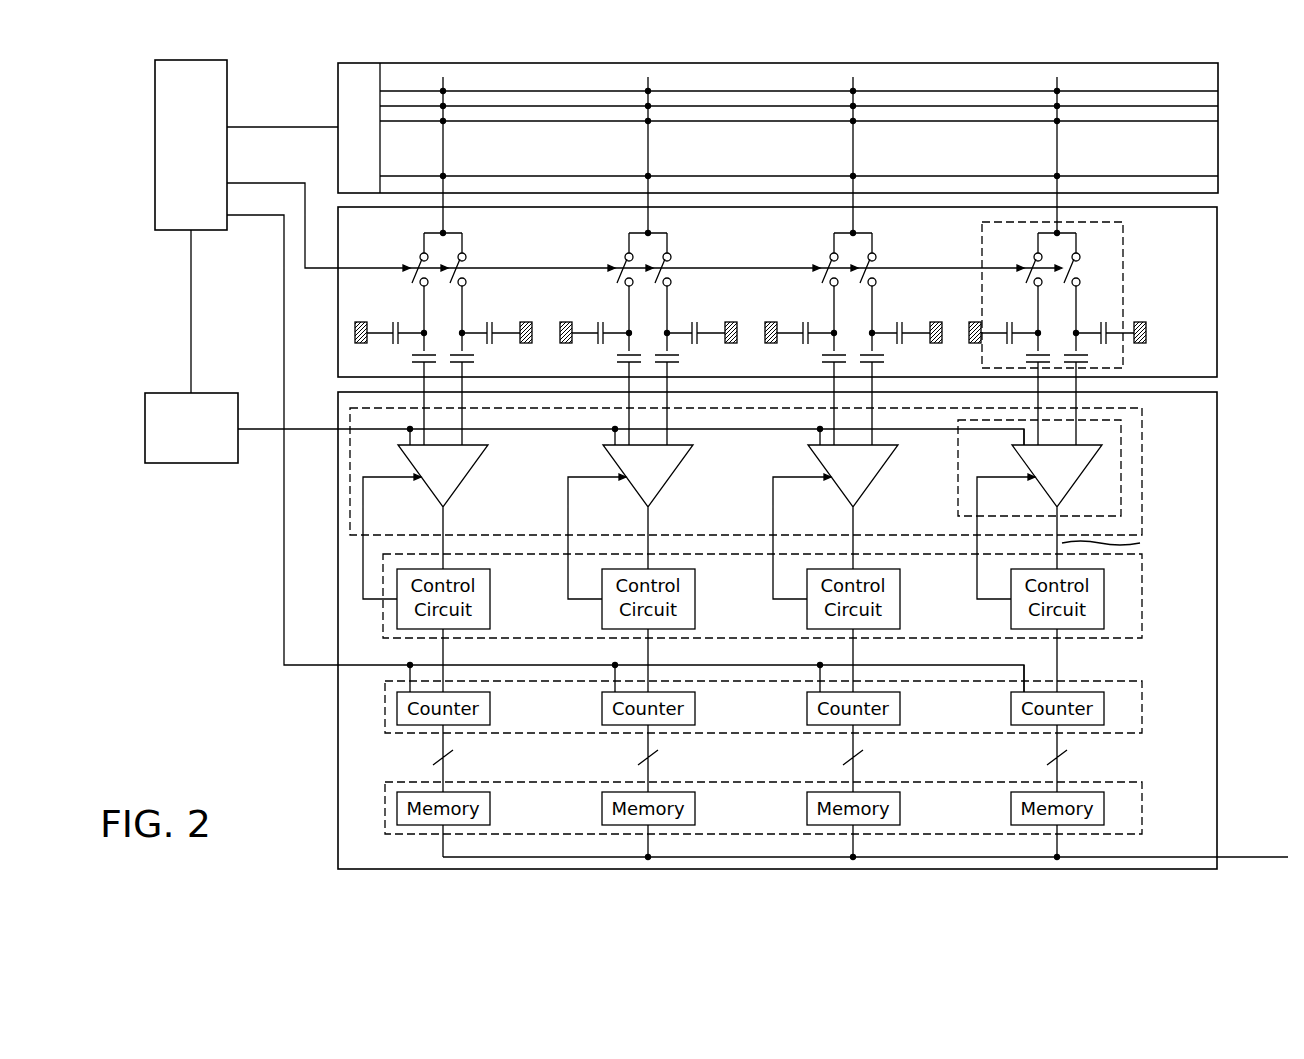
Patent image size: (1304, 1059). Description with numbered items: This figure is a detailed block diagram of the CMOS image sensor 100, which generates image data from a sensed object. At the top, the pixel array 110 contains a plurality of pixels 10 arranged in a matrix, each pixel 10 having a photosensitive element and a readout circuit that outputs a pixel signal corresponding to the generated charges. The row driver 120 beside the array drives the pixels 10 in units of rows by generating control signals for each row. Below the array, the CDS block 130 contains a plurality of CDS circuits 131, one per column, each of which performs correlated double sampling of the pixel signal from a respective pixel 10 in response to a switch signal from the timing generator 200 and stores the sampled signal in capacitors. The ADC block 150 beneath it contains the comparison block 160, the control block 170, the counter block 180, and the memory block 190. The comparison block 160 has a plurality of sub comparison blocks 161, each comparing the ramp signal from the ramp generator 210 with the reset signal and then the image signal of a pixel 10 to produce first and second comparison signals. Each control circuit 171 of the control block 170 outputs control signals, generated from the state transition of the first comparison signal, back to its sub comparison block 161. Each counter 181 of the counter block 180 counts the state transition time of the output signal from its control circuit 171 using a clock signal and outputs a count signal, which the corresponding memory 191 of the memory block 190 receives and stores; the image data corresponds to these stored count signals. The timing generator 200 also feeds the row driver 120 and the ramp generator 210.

The CMOS image sensor 100 is at (128, 57).
The pixel 10 is at (1060, 91).
The pixel array 110 is at (781, 128).
The row driver 120 is at (338, 70).
The correlated double sampling (CDS) block 130 is at (815, 319).
The CDS circuit 131 is at (982, 243).
The analog-to-digital converter (ADC) block 150 is at (1217, 425).
The comparison block 160 is at (784, 503).
The sub comparison block 161 is at (958, 490).
The control block 170 is at (800, 623).
The control circuit 171 is at (1011, 616).
The counter block 180 is at (801, 728).
The counter 181 is at (1010, 708).
The memory block 190 is at (801, 819).
The memory 191 is at (1010, 808).
The timing generator 200 is at (215, 230).
The ramp generator 210 is at (253, 377).